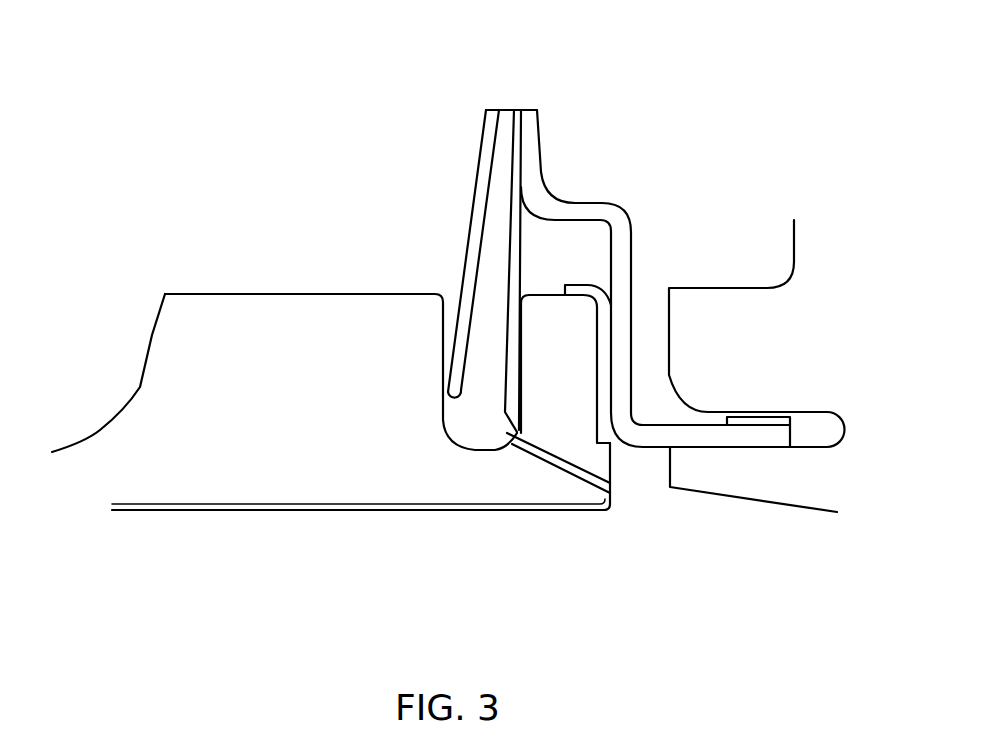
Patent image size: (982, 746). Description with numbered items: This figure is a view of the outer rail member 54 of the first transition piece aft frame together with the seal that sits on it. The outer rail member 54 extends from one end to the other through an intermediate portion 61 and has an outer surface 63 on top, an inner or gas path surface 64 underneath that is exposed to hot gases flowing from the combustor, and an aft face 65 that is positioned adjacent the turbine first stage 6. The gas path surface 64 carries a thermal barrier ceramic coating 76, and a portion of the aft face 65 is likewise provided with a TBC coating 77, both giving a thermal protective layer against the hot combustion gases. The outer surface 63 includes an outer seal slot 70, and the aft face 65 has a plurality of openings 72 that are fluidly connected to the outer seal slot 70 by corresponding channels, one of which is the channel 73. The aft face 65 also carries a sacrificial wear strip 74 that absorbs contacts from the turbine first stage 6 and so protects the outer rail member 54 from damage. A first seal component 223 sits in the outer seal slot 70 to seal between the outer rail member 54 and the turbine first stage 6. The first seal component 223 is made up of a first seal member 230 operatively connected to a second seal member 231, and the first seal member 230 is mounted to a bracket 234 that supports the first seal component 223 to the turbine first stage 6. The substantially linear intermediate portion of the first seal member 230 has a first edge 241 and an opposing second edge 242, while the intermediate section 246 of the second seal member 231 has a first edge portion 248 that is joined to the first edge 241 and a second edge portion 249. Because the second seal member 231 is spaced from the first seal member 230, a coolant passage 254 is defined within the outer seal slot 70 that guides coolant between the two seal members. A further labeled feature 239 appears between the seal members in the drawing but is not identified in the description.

The turbine first stage 6 is at (804, 272).
The outer rail member 54 is at (318, 270).
The intermediate portion 61 is at (360, 278).
The outer surface 63 is at (187, 294).
The gas path surface 64 is at (172, 507).
The aft face 65 is at (610, 455).
The outer seal slot 70 is at (446, 278).
The openings 72 is at (615, 484).
The channel 73 is at (558, 468).
The sacrificial wear strip 74 is at (603, 320).
The thermal barrier ceramic coating 76 is at (310, 507).
The TBC coating 77 is at (505, 431).
The first seal component 223 is at (430, 100).
The first seal member 230 is at (537, 234).
The second seal member 231 is at (455, 159).
The bracket 234 is at (615, 188).
The channel 239 is at (531, 266).
The first edge 241 is at (504, 109).
The second edge 242 is at (518, 433).
The intermediate section 246 is at (470, 224).
The first edge portion 248 is at (492, 109).
The second edge portion 249 is at (445, 403).
The coolant passage 254 is at (460, 373).